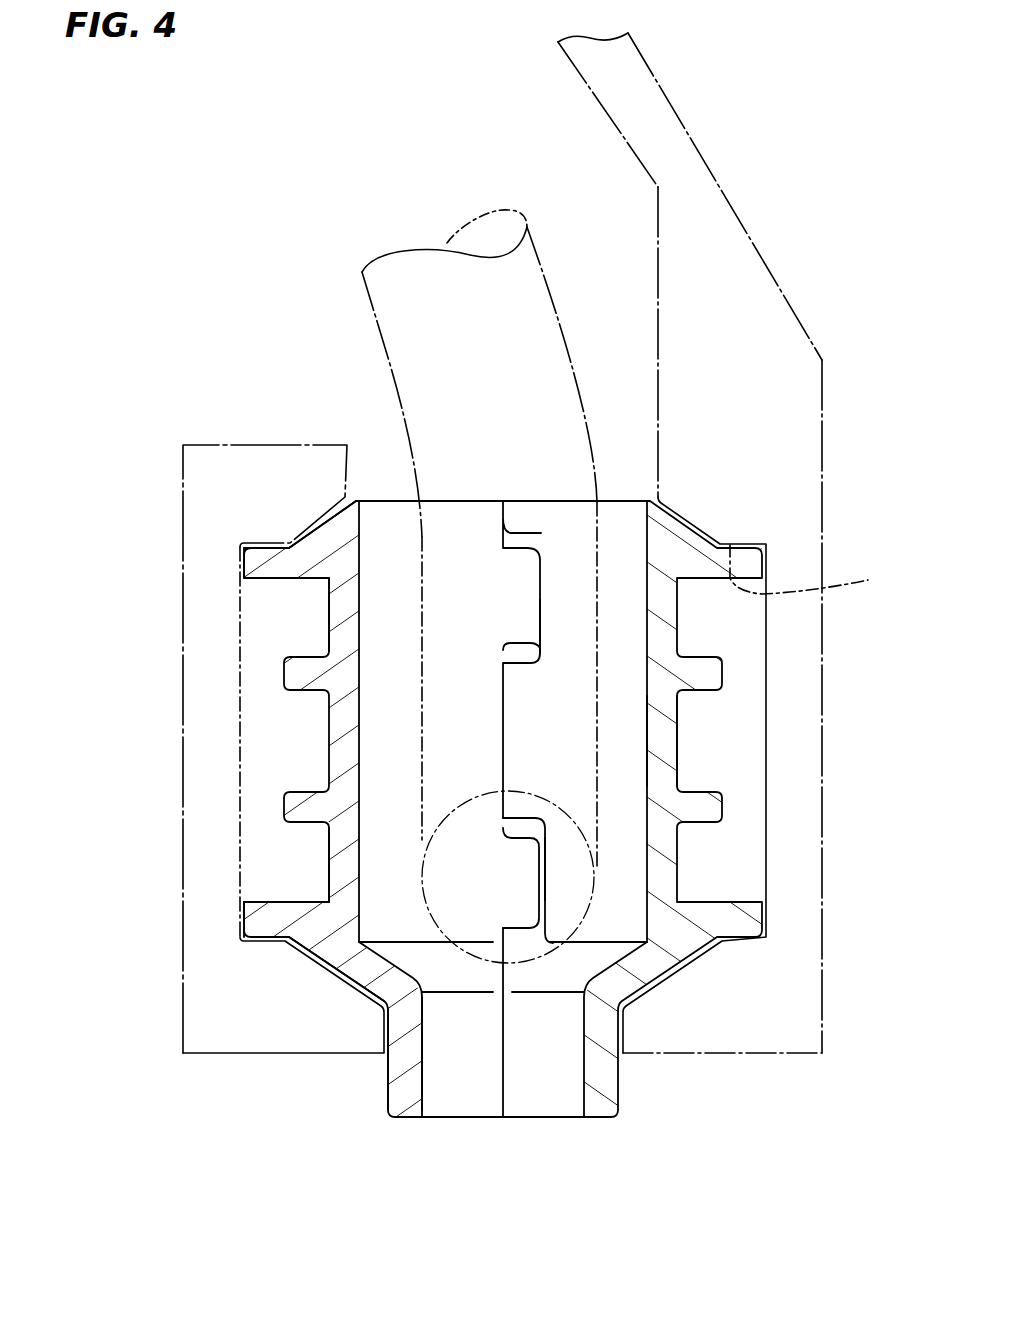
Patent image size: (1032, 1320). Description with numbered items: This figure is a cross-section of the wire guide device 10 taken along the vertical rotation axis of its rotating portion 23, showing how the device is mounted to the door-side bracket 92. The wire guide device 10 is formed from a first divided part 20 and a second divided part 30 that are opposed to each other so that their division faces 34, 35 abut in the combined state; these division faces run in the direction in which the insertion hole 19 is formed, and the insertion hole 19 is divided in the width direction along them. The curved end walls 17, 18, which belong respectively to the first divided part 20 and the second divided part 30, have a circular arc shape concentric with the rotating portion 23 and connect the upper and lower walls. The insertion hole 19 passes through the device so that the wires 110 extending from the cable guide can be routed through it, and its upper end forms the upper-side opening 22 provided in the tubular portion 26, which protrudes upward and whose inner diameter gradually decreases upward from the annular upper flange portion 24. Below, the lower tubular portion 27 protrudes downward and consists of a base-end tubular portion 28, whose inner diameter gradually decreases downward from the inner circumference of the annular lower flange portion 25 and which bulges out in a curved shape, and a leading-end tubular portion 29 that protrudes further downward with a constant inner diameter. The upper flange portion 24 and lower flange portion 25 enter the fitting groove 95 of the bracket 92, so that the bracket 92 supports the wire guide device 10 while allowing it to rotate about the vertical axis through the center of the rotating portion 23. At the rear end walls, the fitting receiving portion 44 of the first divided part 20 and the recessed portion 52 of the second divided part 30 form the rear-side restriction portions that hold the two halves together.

The wire guide device 10 is at (357, 383).
The end wall 17 is at (337, 853).
The end wall 18 is at (667, 775).
The insertion hole 19 is at (562, 743).
The first divided part 20 is at (329, 735).
The upper-side opening 22 is at (650, 513).
The rotating portion 23 is at (125, 455).
The upper flange portion 24 is at (255, 558).
The lower flange portion 25 is at (257, 919).
The tubular portion 26 is at (330, 520).
The lower tubular portion 27 is at (131, 1008).
The base-end tubular portion 28 is at (340, 965).
The leading-end tubular portion 29 is at (400, 1073).
The second divided part 30 is at (678, 726).
The division face 34 is at (507, 1088).
The division face 35 is at (497, 1058).
The fitting receiving portion 44 is at (521, 557).
The recessed portion 52 is at (546, 648).
The bracket 92 is at (745, 248).
The fitting groove 95 is at (814, 571).
The wire 110 is at (435, 273).